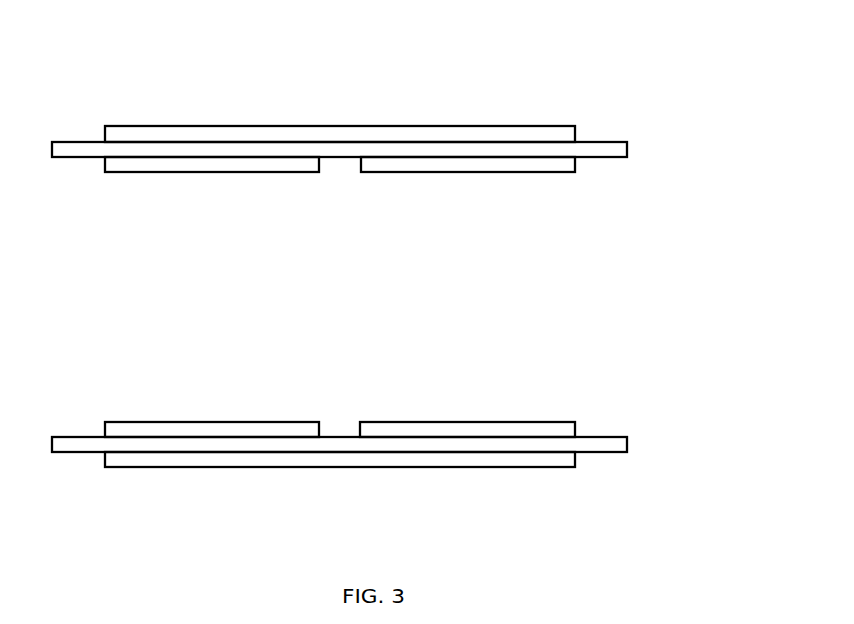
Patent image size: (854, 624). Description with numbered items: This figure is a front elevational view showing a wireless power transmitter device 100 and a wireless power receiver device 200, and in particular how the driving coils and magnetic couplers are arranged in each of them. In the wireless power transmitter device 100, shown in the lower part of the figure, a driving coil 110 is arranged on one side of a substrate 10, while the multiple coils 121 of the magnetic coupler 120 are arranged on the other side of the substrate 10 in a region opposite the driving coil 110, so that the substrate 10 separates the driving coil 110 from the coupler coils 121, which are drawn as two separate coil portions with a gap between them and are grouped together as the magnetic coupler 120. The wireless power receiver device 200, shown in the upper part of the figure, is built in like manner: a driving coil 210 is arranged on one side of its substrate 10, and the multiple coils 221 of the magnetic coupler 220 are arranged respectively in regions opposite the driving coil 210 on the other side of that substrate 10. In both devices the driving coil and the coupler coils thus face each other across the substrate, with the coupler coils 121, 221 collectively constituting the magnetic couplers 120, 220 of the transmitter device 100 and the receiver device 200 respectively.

The wireless power receiver device 200 is at (541, 30).
The driving coil 210 is at (453, 128).
The substrate 10 is at (606, 130).
The coils 221 is at (242, 172).
The magnetic coupler 220 is at (460, 242).
The wireless power transmitter device 100 is at (541, 344).
The magnetic coupler 120 is at (460, 353).
The coils 121 is at (240, 425).
The driving coil 110 is at (385, 467).